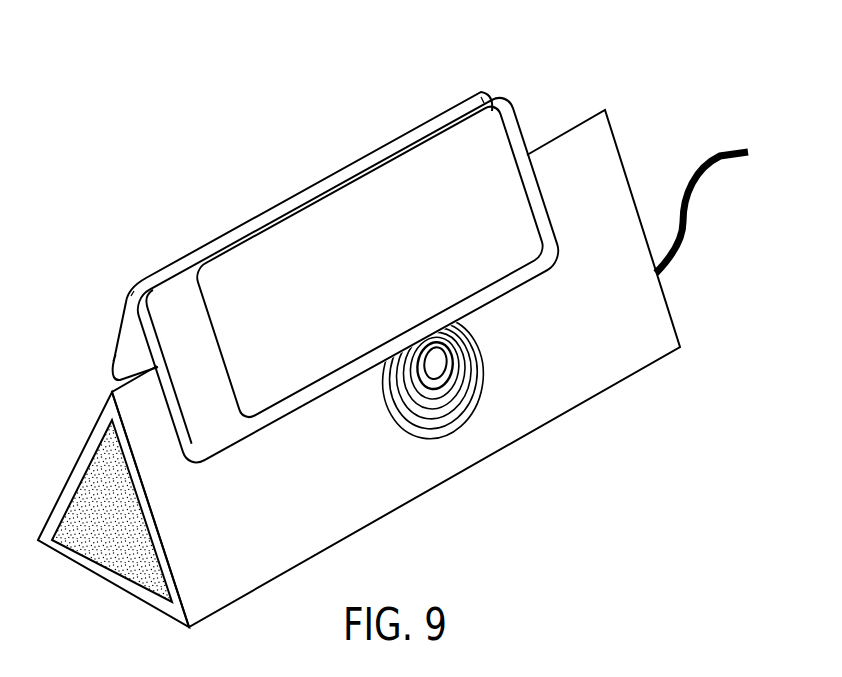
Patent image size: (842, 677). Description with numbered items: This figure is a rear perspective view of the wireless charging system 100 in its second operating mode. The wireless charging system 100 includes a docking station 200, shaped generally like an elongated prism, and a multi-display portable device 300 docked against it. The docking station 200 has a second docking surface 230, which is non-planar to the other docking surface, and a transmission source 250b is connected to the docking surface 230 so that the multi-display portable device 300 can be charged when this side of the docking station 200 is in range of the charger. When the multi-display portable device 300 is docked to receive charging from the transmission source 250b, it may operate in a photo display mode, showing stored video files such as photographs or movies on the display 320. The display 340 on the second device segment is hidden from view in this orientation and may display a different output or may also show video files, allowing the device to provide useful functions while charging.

The wireless charging system 100 is at (330, 249).
The docking station 200 is at (393, 353).
The second docking surface 230 is at (575, 401).
The transmission source 250b is at (455, 430).
The multi-display portable device 300 is at (498, 88).
The display 320 is at (519, 118).
The display 340 is at (263, 212).